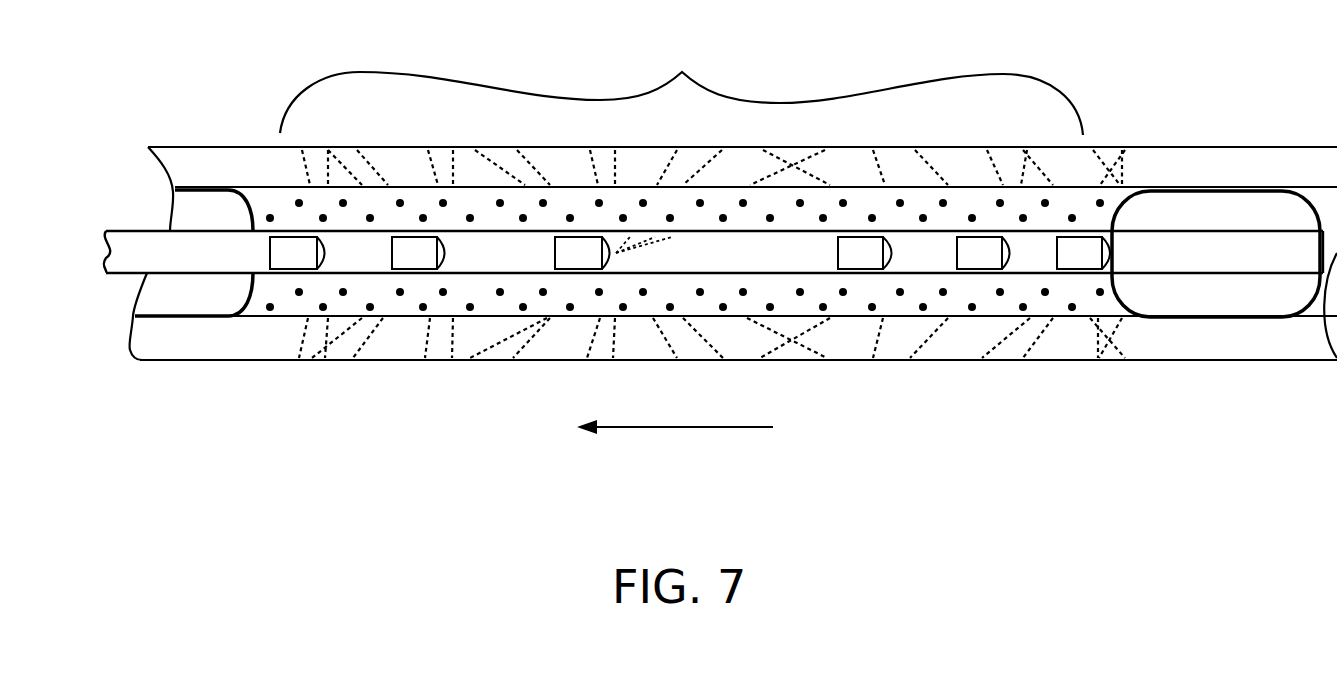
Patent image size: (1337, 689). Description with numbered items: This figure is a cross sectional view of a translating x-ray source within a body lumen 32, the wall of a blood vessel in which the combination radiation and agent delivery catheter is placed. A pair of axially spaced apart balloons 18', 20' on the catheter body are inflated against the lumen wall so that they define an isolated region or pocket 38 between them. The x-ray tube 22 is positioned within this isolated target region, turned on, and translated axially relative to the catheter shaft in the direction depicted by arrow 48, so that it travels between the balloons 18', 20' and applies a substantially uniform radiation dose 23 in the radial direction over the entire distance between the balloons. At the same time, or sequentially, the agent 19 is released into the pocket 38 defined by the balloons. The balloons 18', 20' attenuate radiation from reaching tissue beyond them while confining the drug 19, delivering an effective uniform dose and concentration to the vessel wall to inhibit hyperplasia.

The balloon 18' is at (1216, 331).
The agent 19 is at (398, 292).
The balloon 20' is at (194, 329).
The x-ray tube 22 is at (1017, 258).
The radiation dose 23 is at (1003, 176).
The body lumen 32 is at (258, 163).
The isolated region or pocket 38 is at (681, 86).
The arrow 48 is at (675, 446).